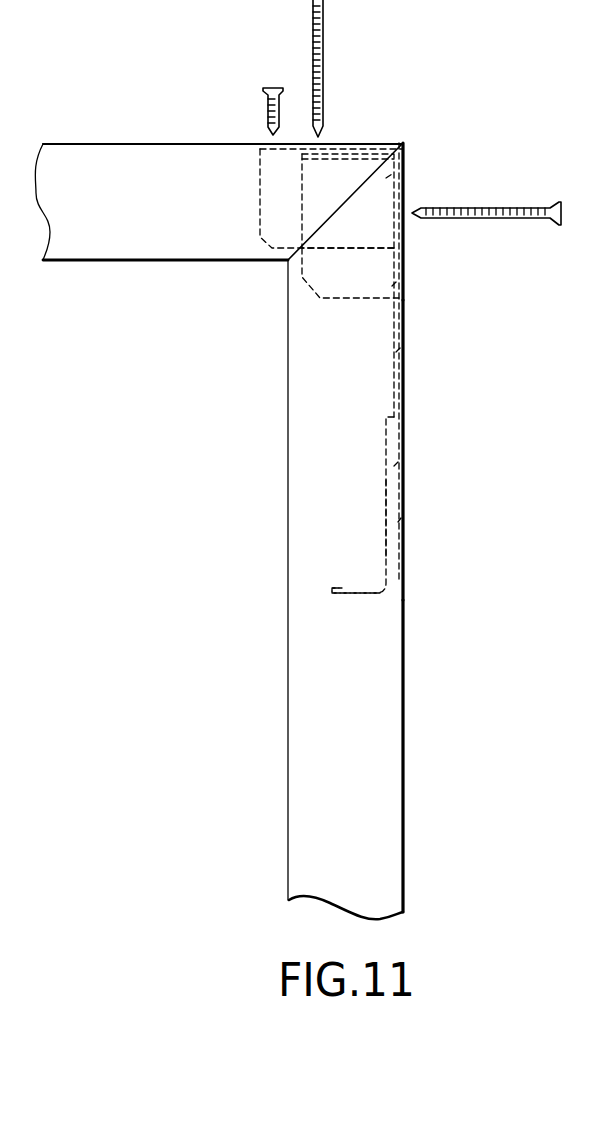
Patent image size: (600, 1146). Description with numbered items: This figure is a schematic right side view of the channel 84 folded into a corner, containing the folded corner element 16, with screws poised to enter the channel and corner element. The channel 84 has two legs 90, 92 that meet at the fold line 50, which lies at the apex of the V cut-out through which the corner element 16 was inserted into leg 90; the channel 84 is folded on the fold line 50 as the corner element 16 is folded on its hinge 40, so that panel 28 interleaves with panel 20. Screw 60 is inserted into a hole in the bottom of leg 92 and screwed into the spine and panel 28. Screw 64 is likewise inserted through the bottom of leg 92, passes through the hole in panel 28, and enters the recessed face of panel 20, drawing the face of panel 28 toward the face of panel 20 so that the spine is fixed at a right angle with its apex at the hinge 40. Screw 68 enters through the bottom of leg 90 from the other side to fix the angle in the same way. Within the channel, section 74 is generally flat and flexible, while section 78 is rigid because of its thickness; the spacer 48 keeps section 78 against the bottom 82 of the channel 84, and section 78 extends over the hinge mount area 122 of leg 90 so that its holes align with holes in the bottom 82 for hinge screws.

The corner element 16 is at (407, 173).
The panel 20 is at (408, 272).
The panel 28 is at (268, 237).
The hinge 40 is at (407, 152).
The spacer 48 is at (362, 596).
The fold line 50 is at (404, 143).
The screw 60 is at (264, 116).
The screw 64 is at (325, 70).
The screw 68 is at (498, 220).
The section 74 is at (407, 344).
The section 78 is at (407, 458).
The bottom 82 is at (406, 680).
The channel 84 is at (105, 146).
The leg 90 is at (402, 738).
The leg 92 is at (105, 258).
The hinge mount area 122 is at (405, 514).